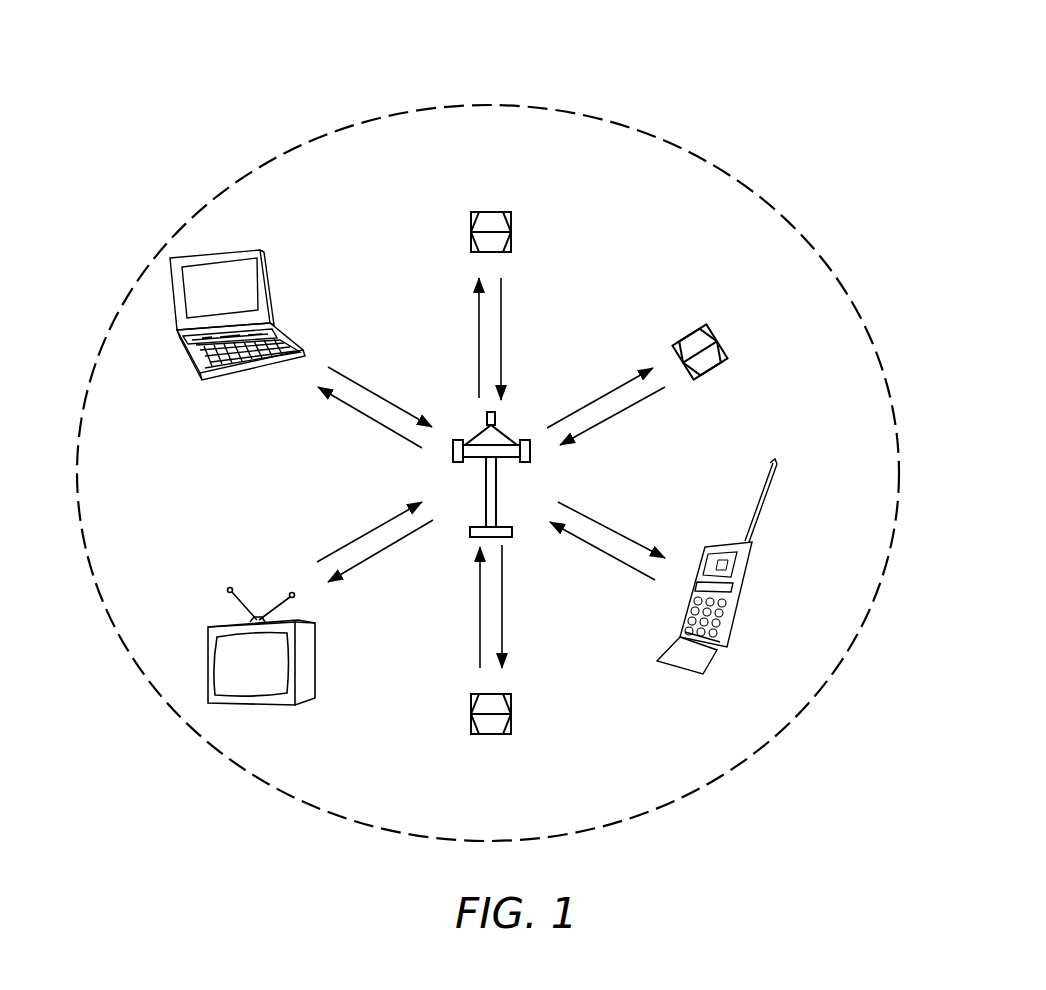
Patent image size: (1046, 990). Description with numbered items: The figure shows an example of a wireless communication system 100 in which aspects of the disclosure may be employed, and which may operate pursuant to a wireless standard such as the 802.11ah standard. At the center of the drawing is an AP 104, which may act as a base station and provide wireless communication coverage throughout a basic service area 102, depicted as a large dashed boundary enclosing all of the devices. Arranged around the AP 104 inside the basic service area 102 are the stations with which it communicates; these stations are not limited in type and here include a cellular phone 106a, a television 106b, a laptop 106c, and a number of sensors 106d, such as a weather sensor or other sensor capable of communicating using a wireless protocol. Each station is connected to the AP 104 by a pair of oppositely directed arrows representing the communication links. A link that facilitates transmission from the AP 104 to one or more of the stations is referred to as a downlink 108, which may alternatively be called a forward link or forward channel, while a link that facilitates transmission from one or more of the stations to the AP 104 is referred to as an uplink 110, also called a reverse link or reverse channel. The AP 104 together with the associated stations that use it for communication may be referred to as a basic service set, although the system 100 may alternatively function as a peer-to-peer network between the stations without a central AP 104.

The wireless communication system 100 is at (750, 95).
The basic service area 102 is at (818, 248).
The AP 104 is at (500, 432).
The cellular phone 106a is at (722, 650).
The television 106b is at (315, 657).
The laptop 106c is at (262, 253).
The sensors 106d is at (492, 212).
The downlink 108 is at (607, 513).
The uplink 110 is at (595, 560).